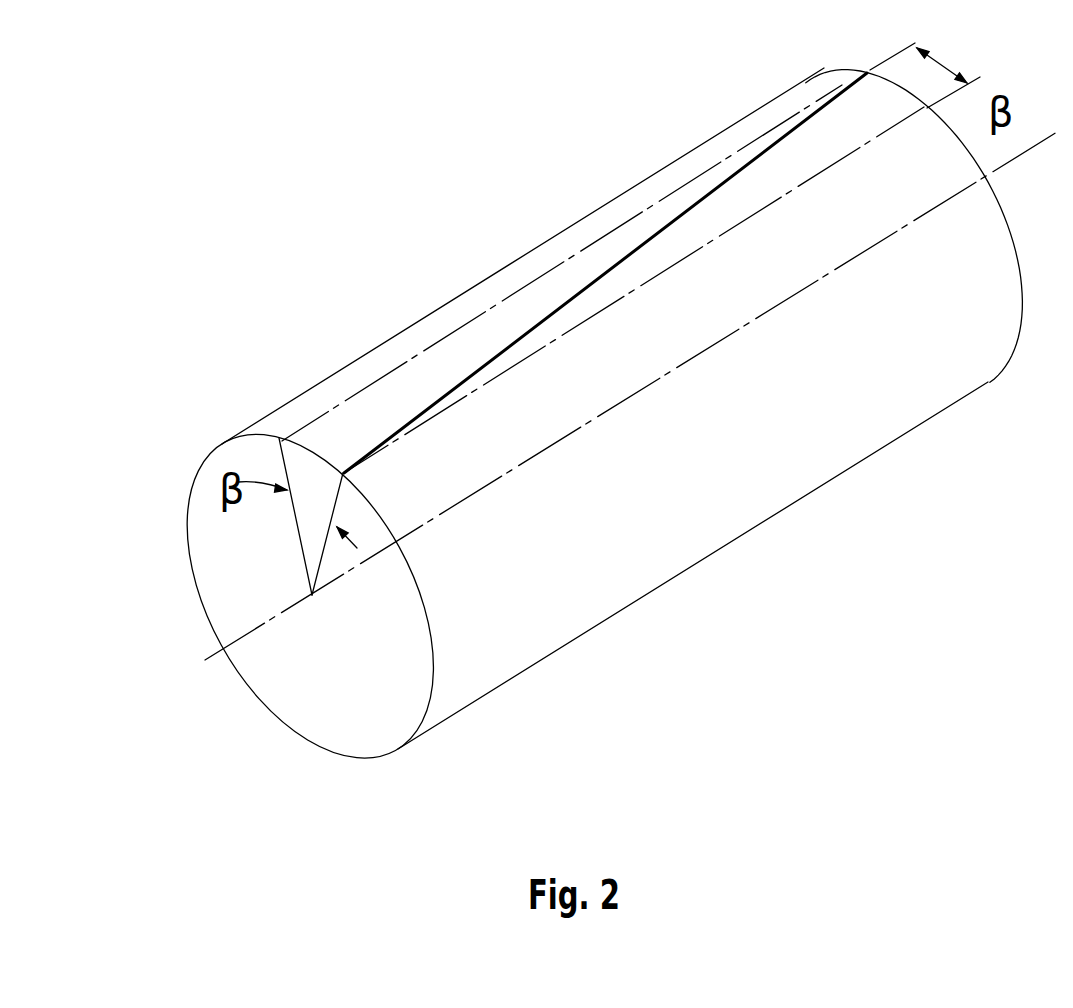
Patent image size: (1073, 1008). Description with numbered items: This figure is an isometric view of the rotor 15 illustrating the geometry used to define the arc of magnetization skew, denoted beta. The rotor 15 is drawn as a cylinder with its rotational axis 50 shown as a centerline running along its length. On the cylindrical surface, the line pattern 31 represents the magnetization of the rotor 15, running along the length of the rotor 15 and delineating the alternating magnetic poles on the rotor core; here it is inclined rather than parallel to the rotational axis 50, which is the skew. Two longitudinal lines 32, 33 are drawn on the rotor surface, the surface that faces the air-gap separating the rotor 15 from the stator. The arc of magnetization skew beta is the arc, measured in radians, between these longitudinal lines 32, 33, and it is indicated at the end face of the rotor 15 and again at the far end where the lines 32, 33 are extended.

The rotor 15 is at (805, 592).
The line pattern 31 is at (505, 345).
The longitudinal line 32 is at (572, 258).
The longitudinal line 33 is at (635, 296).
The rotational axis 50 is at (203, 663).